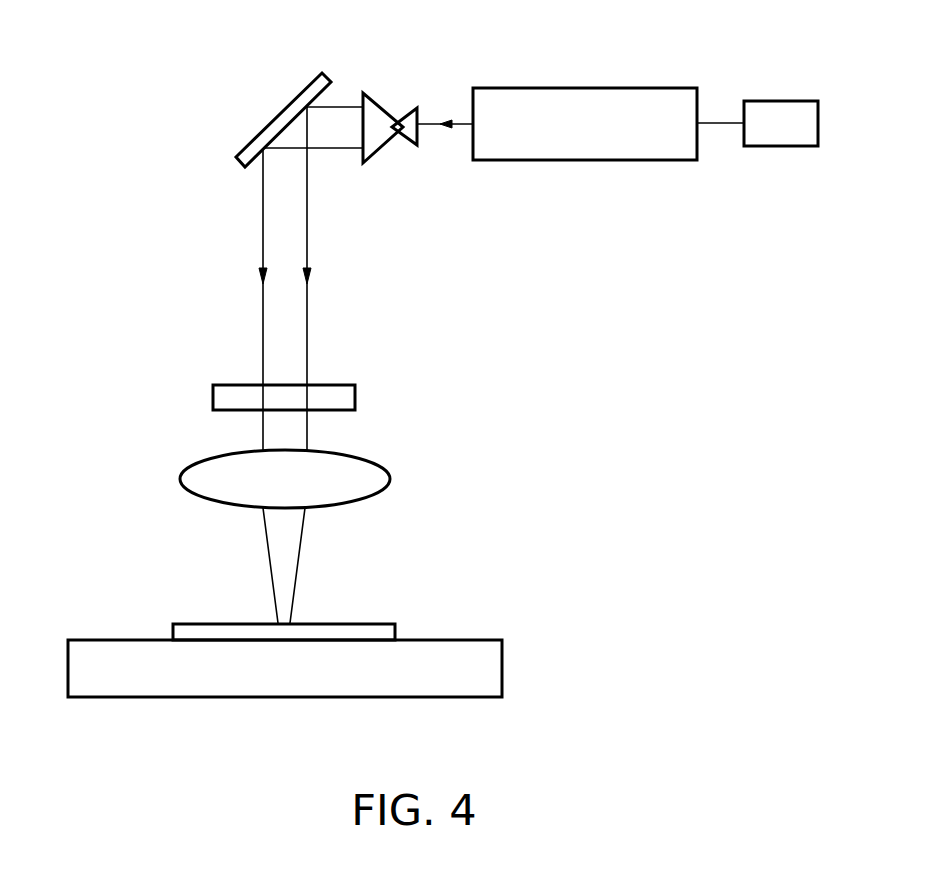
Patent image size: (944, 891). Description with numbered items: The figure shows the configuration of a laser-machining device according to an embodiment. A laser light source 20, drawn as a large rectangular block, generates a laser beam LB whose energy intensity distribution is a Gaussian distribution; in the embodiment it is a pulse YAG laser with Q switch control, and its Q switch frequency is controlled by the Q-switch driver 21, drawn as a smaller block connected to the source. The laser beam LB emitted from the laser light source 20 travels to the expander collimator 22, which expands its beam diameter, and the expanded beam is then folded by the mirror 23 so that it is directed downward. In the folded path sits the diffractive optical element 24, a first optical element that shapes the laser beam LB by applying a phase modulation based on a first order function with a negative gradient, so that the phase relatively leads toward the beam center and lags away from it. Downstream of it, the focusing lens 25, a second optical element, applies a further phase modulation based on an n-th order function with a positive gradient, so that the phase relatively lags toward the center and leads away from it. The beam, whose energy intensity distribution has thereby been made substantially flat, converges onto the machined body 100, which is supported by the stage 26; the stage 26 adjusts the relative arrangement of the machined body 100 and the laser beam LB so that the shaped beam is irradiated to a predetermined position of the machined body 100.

The laser beam LB is at (432, 124).
The laser light source 20 is at (632, 160).
The Q-switch driver 21 is at (785, 146).
The expander collimator 22 is at (380, 146).
The mirror 23 is at (305, 84).
The diffractive optical element 24 is at (356, 393).
The focusing lens 25 is at (390, 476).
The stage 26 is at (503, 658).
The machined body 100 is at (379, 623).